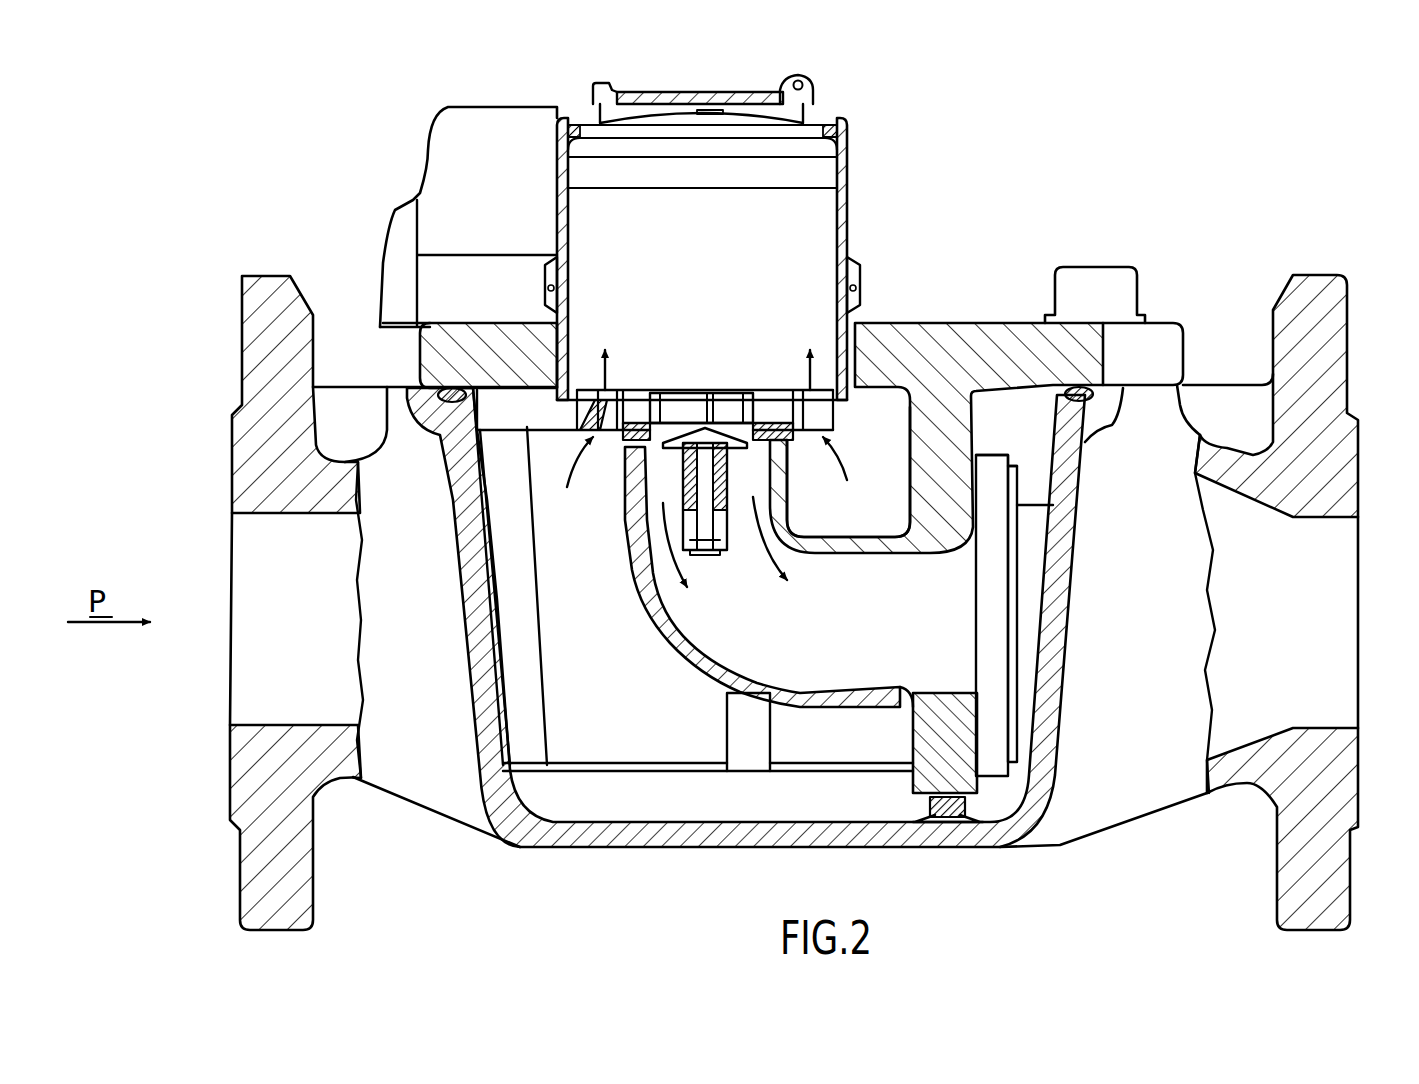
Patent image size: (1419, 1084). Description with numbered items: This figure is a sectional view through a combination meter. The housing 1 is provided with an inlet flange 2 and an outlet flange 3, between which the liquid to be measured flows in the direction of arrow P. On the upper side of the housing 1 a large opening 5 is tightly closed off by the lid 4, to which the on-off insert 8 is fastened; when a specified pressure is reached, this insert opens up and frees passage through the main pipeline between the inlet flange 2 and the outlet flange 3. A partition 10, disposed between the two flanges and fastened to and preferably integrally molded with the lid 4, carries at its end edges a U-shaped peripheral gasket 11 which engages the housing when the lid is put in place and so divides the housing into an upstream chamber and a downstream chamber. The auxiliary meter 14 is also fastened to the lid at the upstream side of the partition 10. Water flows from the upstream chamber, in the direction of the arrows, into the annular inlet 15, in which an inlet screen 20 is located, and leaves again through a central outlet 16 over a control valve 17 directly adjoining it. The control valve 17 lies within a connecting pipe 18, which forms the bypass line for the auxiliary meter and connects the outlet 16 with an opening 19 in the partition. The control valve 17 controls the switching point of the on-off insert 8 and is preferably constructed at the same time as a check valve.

The housing 1 is at (680, 853).
The inlet flange 2 is at (255, 329).
The outlet flange 3 is at (1328, 315).
The lid 4 is at (983, 333).
The opening 5 is at (1022, 396).
The on-off insert 8 is at (987, 650).
The partition 10 is at (953, 497).
The gasket 11 is at (937, 807).
The auxiliary meter 14 is at (860, 193).
The annular inlet 15 is at (798, 425).
The central outlet 16 is at (733, 413).
The control valve 17 is at (737, 467).
The connecting pipe 18 is at (692, 657).
The opening 19 is at (883, 667).
The inlet screen 20 is at (577, 400).